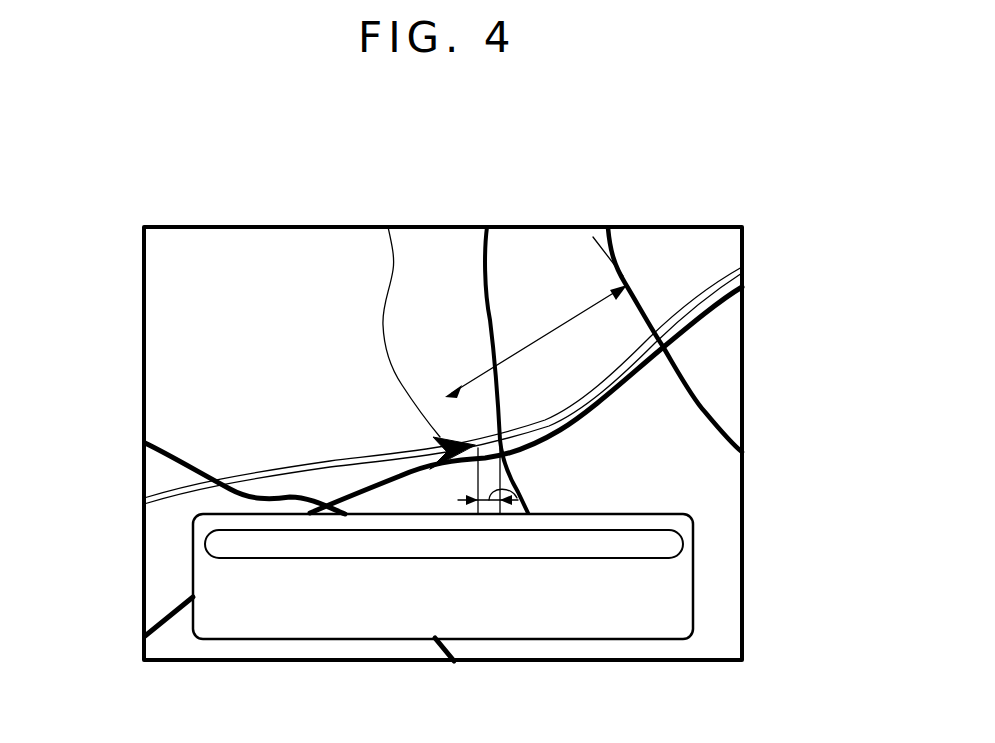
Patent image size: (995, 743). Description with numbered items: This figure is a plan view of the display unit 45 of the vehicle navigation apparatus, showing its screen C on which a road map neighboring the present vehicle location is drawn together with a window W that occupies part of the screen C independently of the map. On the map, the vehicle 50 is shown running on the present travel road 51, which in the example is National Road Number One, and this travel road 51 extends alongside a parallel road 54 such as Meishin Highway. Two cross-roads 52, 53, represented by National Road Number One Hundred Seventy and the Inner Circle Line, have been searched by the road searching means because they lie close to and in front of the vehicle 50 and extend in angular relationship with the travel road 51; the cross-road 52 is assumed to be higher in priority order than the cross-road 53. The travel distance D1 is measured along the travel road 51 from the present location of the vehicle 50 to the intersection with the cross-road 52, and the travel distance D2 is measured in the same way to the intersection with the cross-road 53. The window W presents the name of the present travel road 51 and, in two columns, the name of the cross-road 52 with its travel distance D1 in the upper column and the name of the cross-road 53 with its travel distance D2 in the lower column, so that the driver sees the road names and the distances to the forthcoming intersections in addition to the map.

The display screen 45 is at (548, 662).
The vehicle 50 is at (468, 444).
The travel road 51 is at (646, 380).
The cross-road 52 is at (625, 285).
The cross-road 53 is at (497, 385).
The parallel road 54 is at (245, 473).
The screen C is at (268, 337).
The window W is at (693, 592).
The travel distance D1 is at (536, 341).
The travel distance D2 is at (520, 491).